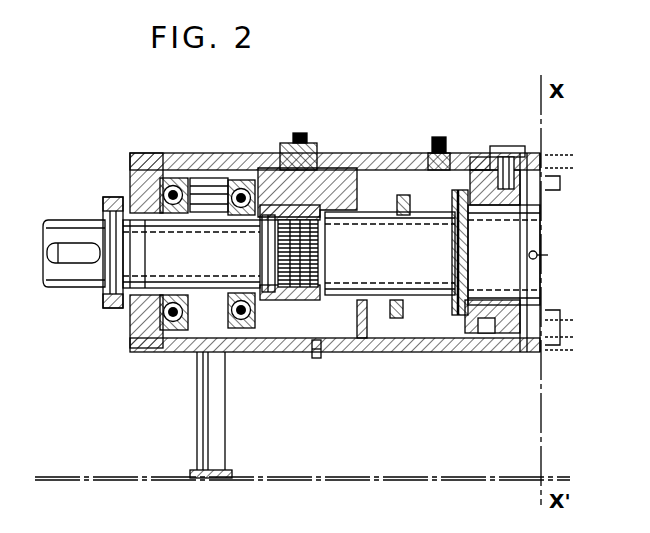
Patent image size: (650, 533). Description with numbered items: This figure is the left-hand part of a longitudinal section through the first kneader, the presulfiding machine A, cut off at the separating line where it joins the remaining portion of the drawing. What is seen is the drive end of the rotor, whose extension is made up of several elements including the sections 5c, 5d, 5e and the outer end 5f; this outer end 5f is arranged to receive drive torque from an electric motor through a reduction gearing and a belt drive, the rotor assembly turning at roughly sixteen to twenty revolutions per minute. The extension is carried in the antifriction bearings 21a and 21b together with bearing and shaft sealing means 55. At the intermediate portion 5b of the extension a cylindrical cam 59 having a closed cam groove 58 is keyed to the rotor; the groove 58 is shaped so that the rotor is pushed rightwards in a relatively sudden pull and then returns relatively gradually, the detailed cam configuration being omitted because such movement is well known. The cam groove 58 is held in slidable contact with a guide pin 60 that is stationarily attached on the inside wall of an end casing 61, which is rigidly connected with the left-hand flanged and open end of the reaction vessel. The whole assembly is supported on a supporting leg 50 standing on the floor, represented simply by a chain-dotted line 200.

The presulfiding machine A is at (161, 151).
The outer end of rotor extension 5f is at (80, 237).
The rotor extension element 5e is at (213, 232).
The rotor extension element 5d is at (318, 225).
The rotor extension element 5c is at (412, 230).
The intermediate portion of rotor extension 5b is at (515, 277).
The antifriction bearing 21a is at (176, 333).
The antifriction bearing 21b is at (240, 330).
The supporting leg 50 is at (219, 423).
The bearing and shaft sealing means 55 is at (389, 300).
The cam groove 58 is at (480, 333).
The cylindrical cam 59 is at (511, 336).
The guide pin 60 is at (517, 141).
The end casing 61 is at (490, 160).
The floor 200 is at (437, 477).